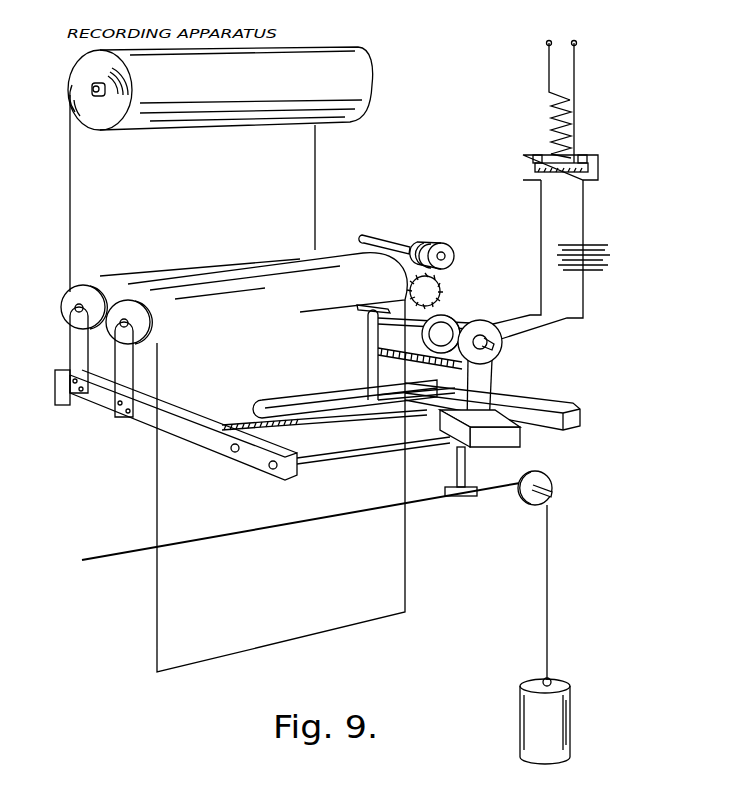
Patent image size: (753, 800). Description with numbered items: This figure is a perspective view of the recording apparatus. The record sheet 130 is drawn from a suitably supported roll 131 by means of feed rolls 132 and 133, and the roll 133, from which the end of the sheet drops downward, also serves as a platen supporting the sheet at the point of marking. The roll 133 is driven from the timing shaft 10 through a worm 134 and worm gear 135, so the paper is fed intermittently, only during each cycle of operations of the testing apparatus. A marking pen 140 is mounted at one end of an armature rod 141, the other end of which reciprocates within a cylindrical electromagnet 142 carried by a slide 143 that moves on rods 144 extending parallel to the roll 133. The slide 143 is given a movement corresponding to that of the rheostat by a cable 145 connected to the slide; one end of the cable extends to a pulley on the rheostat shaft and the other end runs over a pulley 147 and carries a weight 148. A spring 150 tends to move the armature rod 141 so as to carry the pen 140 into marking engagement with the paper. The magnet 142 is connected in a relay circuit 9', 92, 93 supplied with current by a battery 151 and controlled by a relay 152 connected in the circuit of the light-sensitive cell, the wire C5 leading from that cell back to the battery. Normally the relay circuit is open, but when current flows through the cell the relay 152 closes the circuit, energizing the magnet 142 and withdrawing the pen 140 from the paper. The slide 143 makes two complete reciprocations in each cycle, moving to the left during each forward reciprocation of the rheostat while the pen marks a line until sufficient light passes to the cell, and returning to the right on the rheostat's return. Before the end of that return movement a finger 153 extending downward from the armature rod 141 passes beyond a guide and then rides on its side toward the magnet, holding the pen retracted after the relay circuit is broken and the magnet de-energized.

The roll 131 is at (353, 63).
The record sheet 130 is at (165, 485).
The feed roll 132 is at (62, 305).
The feed roll 133 is at (110, 330).
The rods 144 is at (350, 433).
The battery 151 is at (287, 407).
The armature rod 141 is at (369, 326).
The finger 153 is at (370, 375).
The spring 150 is at (376, 360).
The marking pen 140 is at (360, 307).
The shaft 10 is at (380, 236).
The worm 134 is at (437, 243).
The worm gear 135 is at (441, 286).
The cylindrical electromagnet 142 is at (467, 312).
The relay circuit 9' is at (556, 259).
The relay circuit 92 is at (542, 202).
The relay circuit 93 is at (583, 298).
The relay 152 is at (586, 139).
The wire C5 is at (549, 72).
The slide 143 is at (510, 434).
The cable 145 is at (227, 534).
The pulley 147 is at (546, 483).
The weight 148 is at (571, 697).